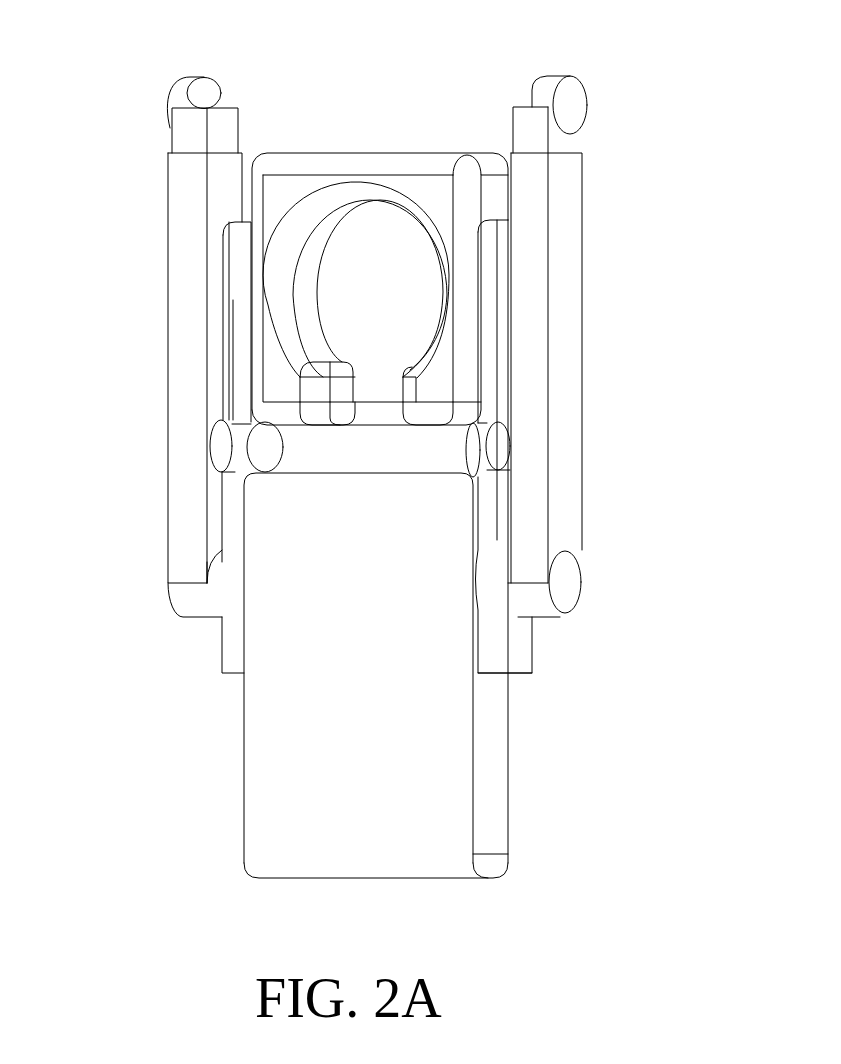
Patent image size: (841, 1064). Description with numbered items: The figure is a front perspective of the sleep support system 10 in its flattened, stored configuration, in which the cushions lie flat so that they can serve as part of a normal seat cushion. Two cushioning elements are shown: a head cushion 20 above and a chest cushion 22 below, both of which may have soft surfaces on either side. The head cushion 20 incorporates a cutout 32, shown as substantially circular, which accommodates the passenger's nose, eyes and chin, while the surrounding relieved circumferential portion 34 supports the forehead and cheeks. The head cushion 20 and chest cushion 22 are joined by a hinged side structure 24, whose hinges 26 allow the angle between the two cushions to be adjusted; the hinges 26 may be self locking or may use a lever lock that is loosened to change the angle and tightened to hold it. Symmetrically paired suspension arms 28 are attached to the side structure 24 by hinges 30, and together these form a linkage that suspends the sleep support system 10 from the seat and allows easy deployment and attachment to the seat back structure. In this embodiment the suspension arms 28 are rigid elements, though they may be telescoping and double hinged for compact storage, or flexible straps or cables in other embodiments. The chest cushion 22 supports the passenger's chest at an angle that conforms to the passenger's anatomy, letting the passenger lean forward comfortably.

The sleep support system 10 is at (135, 714).
The head cushion 20 is at (330, 153).
The chest cushion 22 is at (400, 787).
The hinged side structure 24 is at (492, 517).
The hinges 26 is at (228, 420).
The suspension arms 28 is at (183, 240).
The hinges 30 is at (193, 603).
The cutout 32 is at (365, 280).
The relieved circumferential portion 34 is at (293, 222).